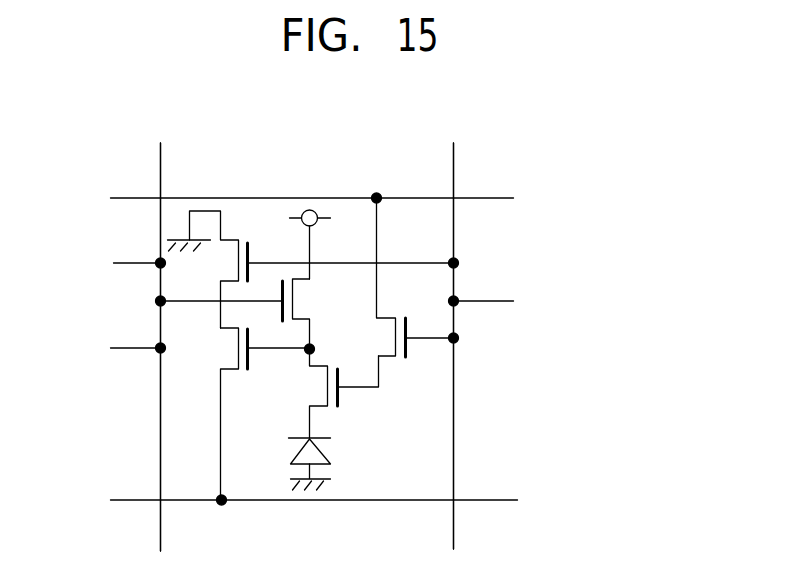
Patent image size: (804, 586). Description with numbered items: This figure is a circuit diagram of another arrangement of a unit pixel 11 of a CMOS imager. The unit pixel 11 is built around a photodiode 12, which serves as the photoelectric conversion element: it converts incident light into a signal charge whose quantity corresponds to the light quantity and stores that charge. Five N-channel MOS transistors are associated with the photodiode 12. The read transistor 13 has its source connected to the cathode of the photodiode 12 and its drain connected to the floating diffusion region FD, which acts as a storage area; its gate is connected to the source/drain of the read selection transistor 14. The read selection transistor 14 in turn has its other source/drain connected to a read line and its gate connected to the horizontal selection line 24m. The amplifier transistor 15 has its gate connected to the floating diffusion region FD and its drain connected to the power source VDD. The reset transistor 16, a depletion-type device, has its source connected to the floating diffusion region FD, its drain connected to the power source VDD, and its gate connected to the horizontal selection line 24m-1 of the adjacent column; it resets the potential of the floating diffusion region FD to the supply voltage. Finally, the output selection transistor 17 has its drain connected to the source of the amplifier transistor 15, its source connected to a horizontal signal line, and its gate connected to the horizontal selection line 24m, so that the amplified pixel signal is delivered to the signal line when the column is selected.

The unit pixel 11 is at (493, 152).
The photodiode 12 is at (331, 453).
The read transistor 13 is at (322, 386).
The read selection transistor 14 is at (384, 347).
The amplifier transistor 15 is at (233, 348).
The reset transistor 16 is at (297, 299).
The output selection transistor 17 is at (233, 263).
The horizontal selection line 24m-1 is at (160, 533).
The horizontal selection line 24m is at (453, 533).
The floating diffusion region FD is at (314, 348).
The power source VDD is at (329, 244).